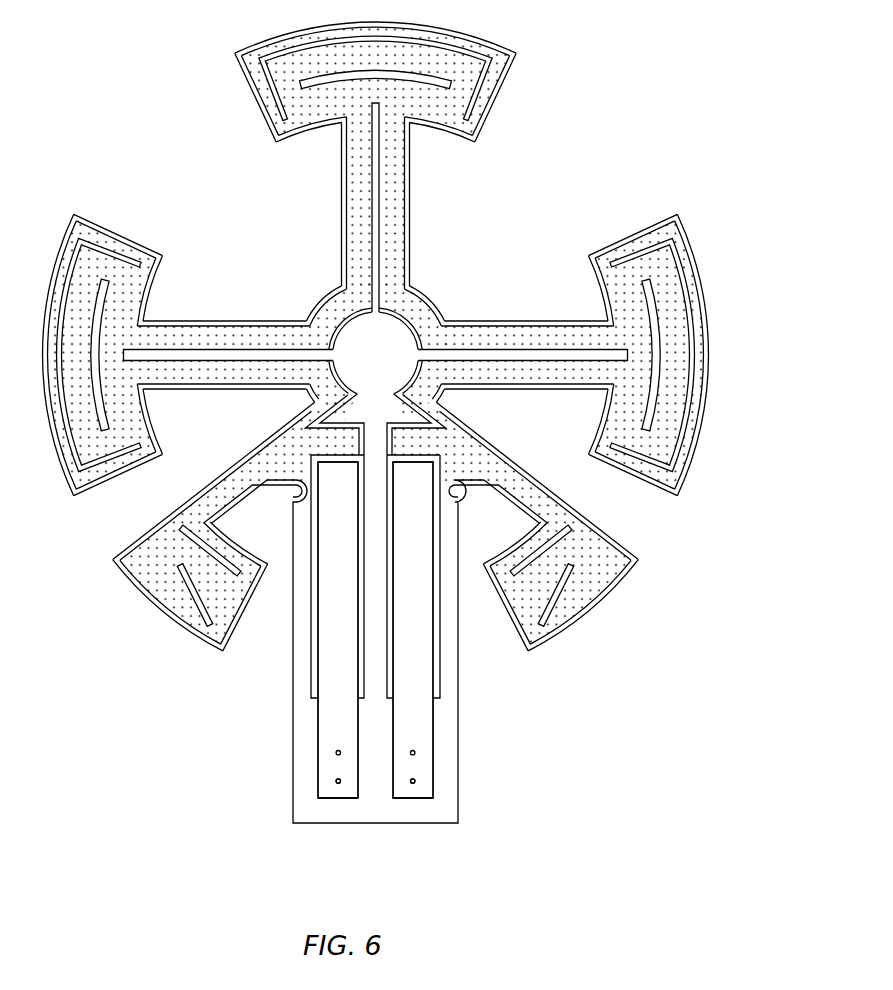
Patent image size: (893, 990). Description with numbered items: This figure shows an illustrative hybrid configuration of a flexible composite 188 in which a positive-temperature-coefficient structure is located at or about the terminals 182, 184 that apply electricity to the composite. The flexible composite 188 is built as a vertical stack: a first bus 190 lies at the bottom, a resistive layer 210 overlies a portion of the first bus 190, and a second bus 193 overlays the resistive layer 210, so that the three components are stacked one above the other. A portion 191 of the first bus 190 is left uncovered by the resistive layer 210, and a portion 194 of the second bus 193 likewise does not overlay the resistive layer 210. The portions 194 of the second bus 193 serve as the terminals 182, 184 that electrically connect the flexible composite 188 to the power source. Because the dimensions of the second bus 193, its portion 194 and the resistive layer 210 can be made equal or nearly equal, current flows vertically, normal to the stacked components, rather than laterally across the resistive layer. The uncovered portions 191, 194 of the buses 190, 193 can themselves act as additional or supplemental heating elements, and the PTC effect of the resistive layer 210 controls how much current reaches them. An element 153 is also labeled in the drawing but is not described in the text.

The flexible composite 188 is at (413, 435).
The first bus 190 is at (674, 352).
The uncovered portion of the first bus 191 is at (538, 625).
The second bus 193 is at (327, 537).
The resistive layer 210 is at (313, 697).
The terminal 182 is at (337, 743).
The terminal 184 is at (413, 753).
The substrate 153 is at (447, 720).
The uncovered portion of the second bus 194 is at (338, 795).